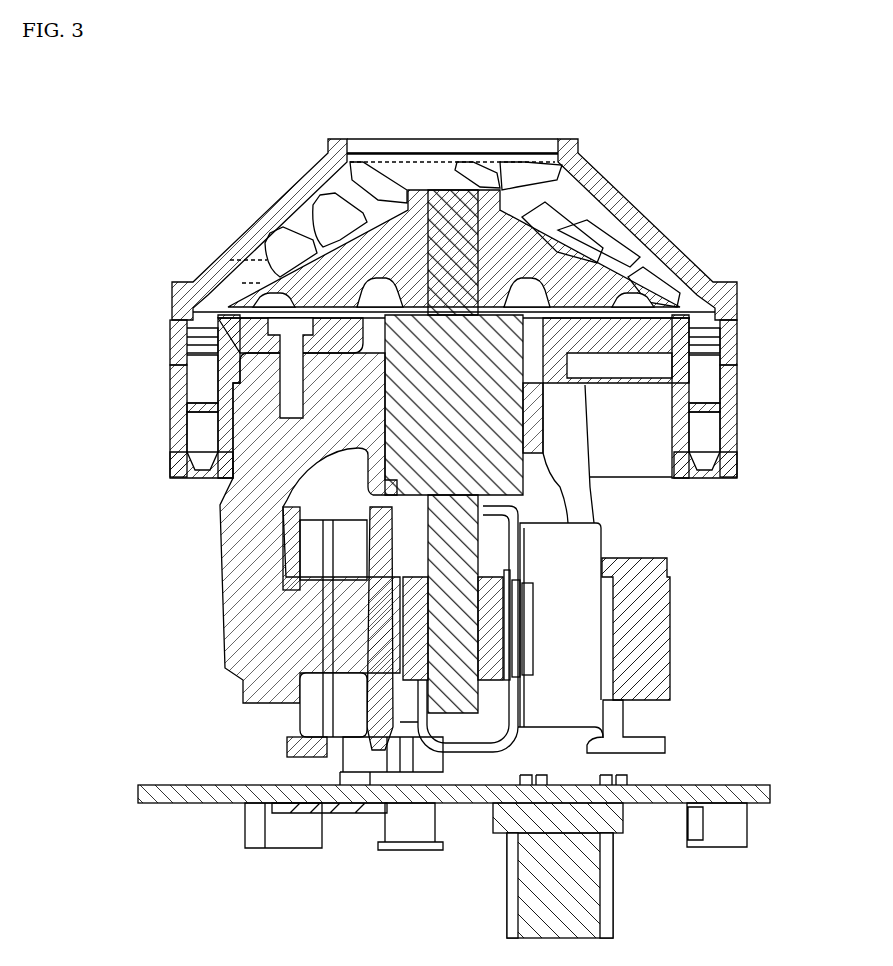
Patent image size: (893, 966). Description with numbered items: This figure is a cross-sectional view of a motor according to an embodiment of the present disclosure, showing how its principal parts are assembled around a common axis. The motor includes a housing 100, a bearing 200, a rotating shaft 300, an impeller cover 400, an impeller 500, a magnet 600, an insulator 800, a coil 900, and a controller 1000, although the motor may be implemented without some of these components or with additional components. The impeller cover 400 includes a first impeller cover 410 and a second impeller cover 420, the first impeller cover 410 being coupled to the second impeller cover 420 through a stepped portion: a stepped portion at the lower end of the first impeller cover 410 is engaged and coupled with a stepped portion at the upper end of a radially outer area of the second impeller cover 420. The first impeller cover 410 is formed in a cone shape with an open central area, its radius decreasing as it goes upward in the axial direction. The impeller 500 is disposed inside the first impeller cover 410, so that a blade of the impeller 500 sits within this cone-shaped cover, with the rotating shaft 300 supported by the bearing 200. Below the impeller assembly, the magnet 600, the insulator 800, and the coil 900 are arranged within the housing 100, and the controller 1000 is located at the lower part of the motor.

The housing 100 is at (232, 636).
The bearing 200 is at (632, 226).
The rotating shaft 300 is at (456, 233).
The impeller cover 400 is at (385, 392).
The first impeller cover 410 is at (178, 316).
The second impeller cover 420 is at (416, 421).
The impeller 500 is at (413, 193).
The magnet 600 is at (490, 647).
The insulator 800 is at (297, 518).
The coil 900 is at (293, 408).
The controller 1000 is at (142, 792).